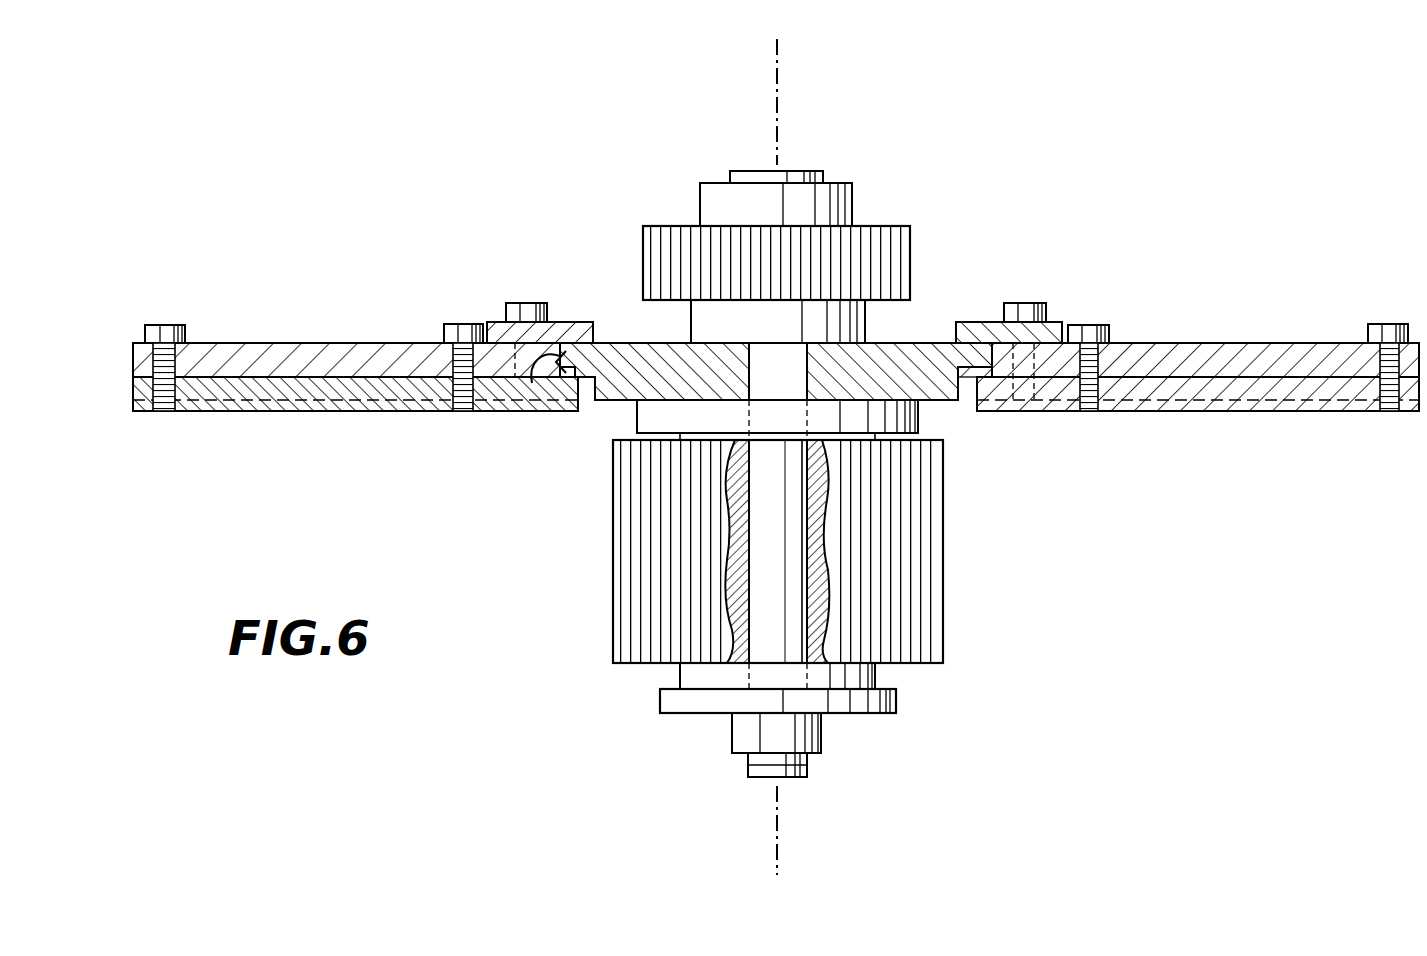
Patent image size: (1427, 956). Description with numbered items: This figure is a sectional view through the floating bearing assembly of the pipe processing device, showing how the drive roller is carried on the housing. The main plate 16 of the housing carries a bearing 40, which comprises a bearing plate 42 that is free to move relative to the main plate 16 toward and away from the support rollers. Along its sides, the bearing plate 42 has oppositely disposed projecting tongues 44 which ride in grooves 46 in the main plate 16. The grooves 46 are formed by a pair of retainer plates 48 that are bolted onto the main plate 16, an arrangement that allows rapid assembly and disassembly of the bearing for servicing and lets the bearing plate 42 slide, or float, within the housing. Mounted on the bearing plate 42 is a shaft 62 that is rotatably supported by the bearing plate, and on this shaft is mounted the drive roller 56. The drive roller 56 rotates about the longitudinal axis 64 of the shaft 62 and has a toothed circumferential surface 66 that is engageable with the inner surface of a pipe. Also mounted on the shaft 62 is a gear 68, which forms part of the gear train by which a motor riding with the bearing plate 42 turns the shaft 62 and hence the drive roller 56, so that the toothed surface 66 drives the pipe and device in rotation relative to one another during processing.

The main plate 16 is at (1238, 352).
The bearing 40 is at (903, 350).
The bearing plate 42 is at (642, 345).
The projecting tongues 44 is at (583, 345).
The grooves 46 is at (532, 383).
The retainer plates 48 is at (993, 325).
The drive roller 56 is at (915, 540).
The shaft 62 is at (810, 763).
The longitudinal axis 64 is at (777, 833).
The toothed circumferential surface 66 is at (907, 513).
The gear 68 is at (910, 242).